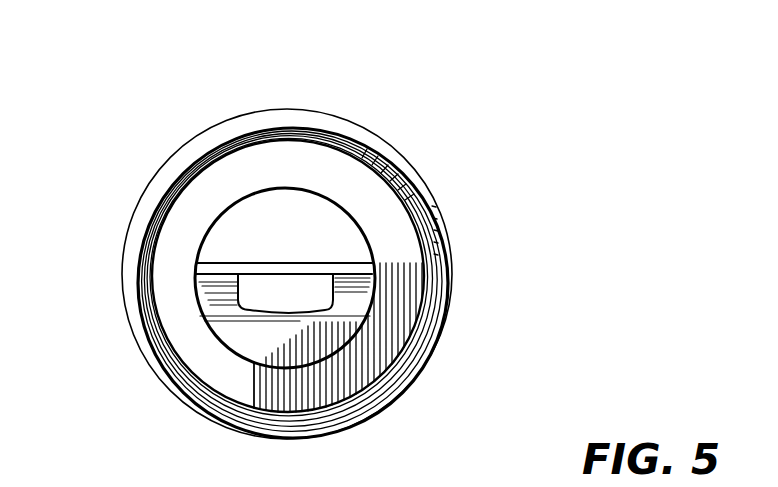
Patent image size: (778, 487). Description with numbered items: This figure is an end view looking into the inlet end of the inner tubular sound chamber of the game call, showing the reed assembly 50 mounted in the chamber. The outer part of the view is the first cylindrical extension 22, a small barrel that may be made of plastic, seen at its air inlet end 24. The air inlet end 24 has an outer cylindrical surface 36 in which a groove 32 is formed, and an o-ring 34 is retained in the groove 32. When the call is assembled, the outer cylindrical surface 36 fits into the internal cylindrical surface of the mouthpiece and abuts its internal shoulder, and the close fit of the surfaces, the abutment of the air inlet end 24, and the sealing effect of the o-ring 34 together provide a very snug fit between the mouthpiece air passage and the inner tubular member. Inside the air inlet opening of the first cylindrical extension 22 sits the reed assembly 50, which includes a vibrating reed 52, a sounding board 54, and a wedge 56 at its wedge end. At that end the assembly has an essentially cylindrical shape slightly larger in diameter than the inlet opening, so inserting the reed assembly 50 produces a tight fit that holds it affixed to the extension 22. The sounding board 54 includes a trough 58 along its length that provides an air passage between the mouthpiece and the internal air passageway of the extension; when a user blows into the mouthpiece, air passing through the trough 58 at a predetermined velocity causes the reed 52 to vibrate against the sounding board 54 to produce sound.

The first cylindrical extension 22 is at (200, 110).
The air inlet end 24 is at (440, 262).
The groove 32 is at (358, 149).
The o-ring 34 is at (388, 166).
The outer cylindrical surface 36 is at (266, 139).
The reed assembly 50 is at (319, 235).
The vibrating reed 52 is at (232, 255).
The sounding board 54 is at (212, 343).
The wedge 56 is at (213, 205).
The trough 58 is at (300, 296).